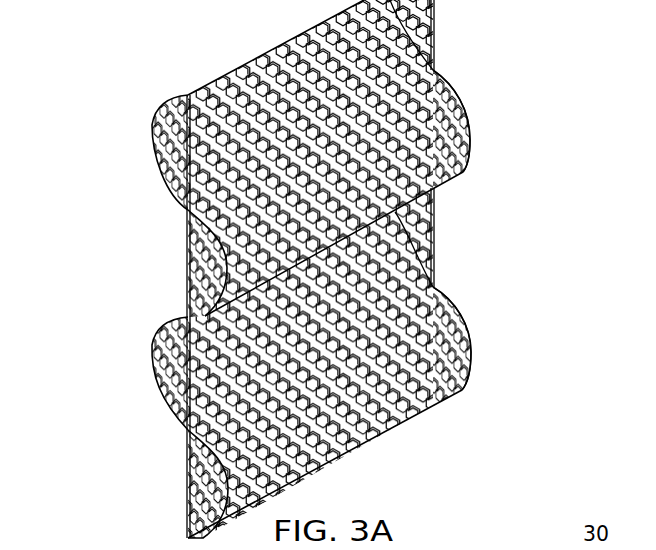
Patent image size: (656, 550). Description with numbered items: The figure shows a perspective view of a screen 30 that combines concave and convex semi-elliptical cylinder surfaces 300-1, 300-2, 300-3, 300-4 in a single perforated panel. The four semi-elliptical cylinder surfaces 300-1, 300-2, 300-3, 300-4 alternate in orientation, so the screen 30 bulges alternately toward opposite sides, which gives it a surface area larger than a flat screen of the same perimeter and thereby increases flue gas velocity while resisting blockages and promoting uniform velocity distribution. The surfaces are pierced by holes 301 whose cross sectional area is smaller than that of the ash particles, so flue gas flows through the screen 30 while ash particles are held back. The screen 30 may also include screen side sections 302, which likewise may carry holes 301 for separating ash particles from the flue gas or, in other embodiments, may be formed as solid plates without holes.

The screen 30 is at (425, 440).
The semi-elliptical cylinder surface 300-1 is at (140, 141).
The semi-elliptical cylinder surface 300-2 is at (490, 146).
The semi-elliptical cylinder surface 300-3 is at (140, 363).
The semi-elliptical cylinder surface 300-4 is at (492, 364).
The holes 301 is at (452, 112).
The screen side sections 302 is at (188, 295).